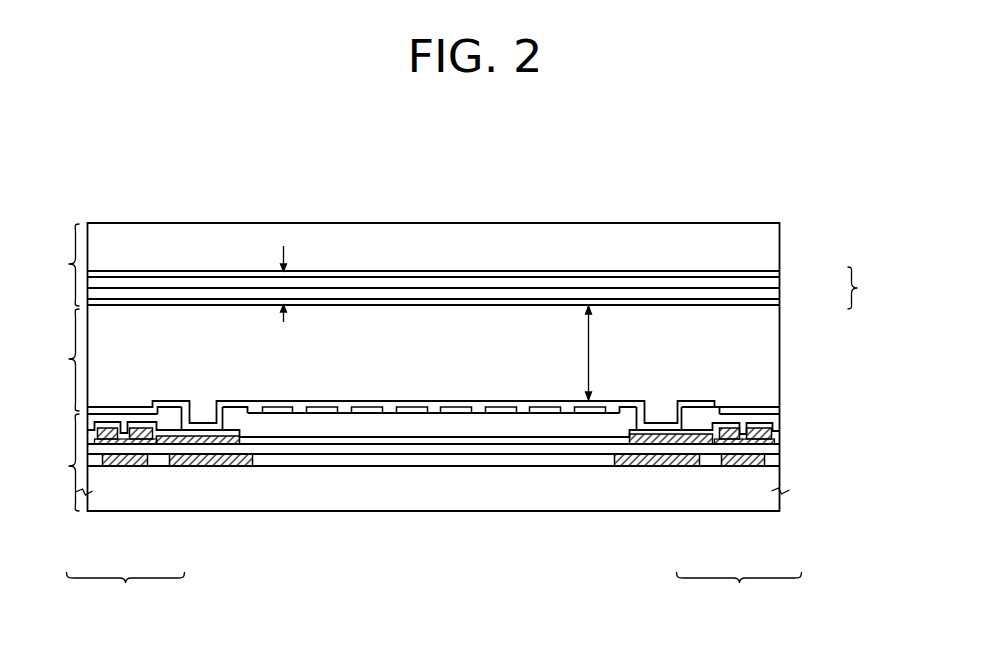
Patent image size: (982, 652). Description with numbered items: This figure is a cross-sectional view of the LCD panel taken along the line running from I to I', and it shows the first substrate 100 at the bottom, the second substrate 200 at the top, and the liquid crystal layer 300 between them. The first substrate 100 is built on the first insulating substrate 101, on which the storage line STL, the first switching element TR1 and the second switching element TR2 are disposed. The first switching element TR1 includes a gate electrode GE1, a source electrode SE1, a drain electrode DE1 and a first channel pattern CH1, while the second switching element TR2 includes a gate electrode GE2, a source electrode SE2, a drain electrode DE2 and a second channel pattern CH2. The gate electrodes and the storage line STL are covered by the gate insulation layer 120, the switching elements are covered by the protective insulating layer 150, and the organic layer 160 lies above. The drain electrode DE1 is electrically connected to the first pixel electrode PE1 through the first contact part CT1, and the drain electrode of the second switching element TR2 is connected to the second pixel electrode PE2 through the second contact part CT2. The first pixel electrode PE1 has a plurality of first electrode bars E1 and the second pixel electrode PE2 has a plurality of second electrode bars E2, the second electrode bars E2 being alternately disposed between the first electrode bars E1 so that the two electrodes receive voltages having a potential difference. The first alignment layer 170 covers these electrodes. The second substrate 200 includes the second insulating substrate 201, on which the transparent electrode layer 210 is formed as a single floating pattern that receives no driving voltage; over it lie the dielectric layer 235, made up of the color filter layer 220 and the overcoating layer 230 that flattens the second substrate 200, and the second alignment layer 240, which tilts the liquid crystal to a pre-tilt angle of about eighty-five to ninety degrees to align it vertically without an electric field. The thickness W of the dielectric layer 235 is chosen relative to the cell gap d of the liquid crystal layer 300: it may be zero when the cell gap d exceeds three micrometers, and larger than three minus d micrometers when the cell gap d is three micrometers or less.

The second insulating substrate 201 is at (780, 232).
The transparent electrode layer 210 is at (782, 272).
The color filter layer 220 is at (782, 278).
The overcoating layer 230 is at (782, 300).
The second alignment layer 240 is at (782, 306).
The dielectric layer 235 is at (874, 288).
The second substrate 200 is at (52, 265).
The liquid crystal layer 300 is at (52, 360).
The first substrate 100 is at (52, 462).
The thickness of the dielectric layer W is at (286, 268).
The cell gap d is at (580, 353).
The first alignment layer 170 is at (782, 403).
The organic layer 160 is at (782, 414).
The protective insulating layer 150 is at (782, 436).
The gate insulation layer 120 is at (782, 462).
The first insulating substrate 101 is at (782, 485).
The first channel pattern CH1 is at (110, 437).
The first contact part CT1 is at (203, 413).
The first pixel electrode PE1 is at (237, 407).
The first electrode bars E1 is at (408, 408).
The second electrode bars E2 is at (452, 408).
The second contact part CT2 is at (661, 413).
The second pixel electrode PE2 is at (698, 407).
The second channel pattern CH2 is at (745, 432).
The source electrode SE1 is at (97, 441).
The gate electrode GE1 is at (127, 468).
The drain electrode DE1 is at (157, 441).
The storage line STL is at (207, 468).
The drain electrode DE2 is at (707, 441).
The gate electrode GE2 is at (740, 468).
The source electrode SE2 is at (777, 441).
The first switching element TR1 is at (126, 592).
The second switching element TR2 is at (739, 592).
The section line end point I is at (83, 531).
The section line end point I' is at (791, 531).